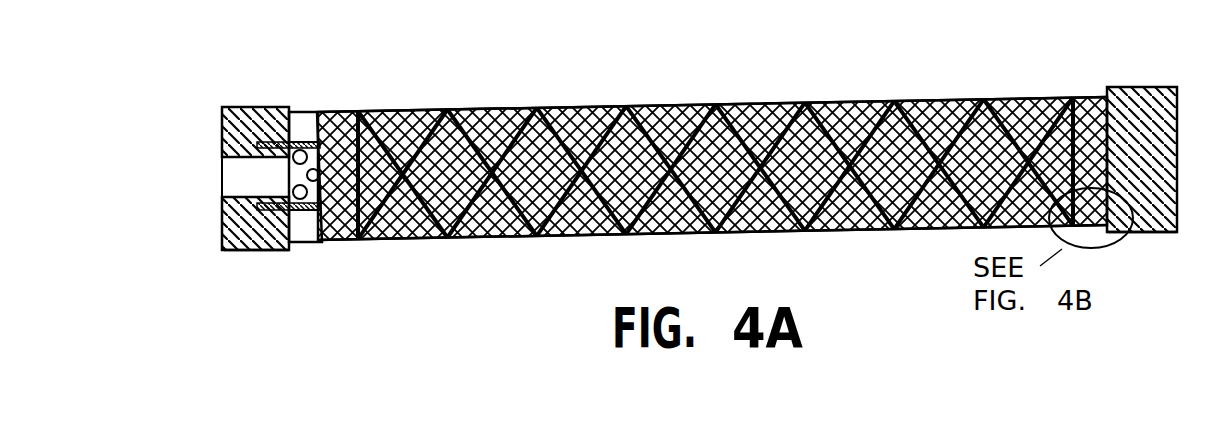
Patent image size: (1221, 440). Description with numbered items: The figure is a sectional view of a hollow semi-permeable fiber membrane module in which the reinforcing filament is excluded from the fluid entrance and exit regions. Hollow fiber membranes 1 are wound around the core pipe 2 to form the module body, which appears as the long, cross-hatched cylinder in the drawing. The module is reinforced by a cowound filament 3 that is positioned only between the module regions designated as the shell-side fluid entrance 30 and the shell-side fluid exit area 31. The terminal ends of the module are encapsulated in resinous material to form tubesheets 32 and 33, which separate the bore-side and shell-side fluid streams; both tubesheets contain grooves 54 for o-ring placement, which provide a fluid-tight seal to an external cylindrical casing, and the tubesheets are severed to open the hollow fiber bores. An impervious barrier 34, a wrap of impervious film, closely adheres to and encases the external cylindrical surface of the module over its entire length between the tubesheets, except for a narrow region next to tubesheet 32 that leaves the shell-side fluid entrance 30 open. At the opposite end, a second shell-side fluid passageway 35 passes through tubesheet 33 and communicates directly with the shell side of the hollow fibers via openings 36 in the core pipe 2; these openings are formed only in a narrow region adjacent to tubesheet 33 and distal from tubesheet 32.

The hollow fiber membranes 1 is at (755, 107).
The core pipe 2 is at (313, 214).
The cowound filament 3 is at (553, 238).
The shell-side fluid entrance 30 is at (1073, 98).
The shell-side fluid exit area 31 is at (309, 112).
The tubesheet 32 is at (1165, 88).
The tubesheet 33 is at (274, 108).
The impervious barrier 34 is at (482, 108).
The second shell-side fluid passageway 35 is at (228, 176).
The openings 36 is at (302, 212).
The grooves 54 is at (249, 252).